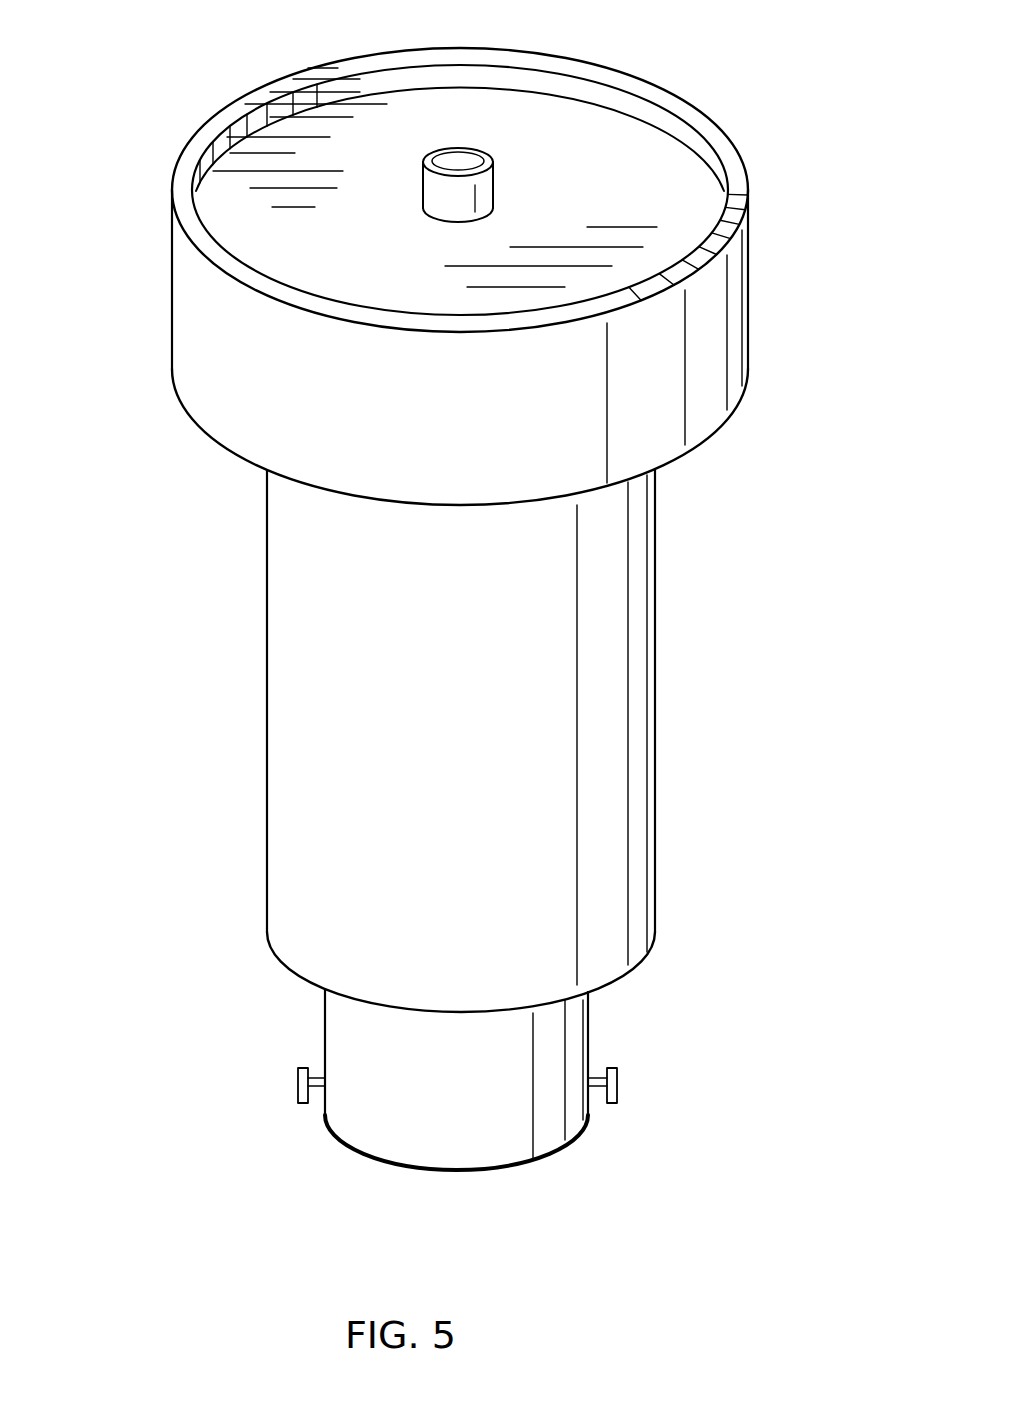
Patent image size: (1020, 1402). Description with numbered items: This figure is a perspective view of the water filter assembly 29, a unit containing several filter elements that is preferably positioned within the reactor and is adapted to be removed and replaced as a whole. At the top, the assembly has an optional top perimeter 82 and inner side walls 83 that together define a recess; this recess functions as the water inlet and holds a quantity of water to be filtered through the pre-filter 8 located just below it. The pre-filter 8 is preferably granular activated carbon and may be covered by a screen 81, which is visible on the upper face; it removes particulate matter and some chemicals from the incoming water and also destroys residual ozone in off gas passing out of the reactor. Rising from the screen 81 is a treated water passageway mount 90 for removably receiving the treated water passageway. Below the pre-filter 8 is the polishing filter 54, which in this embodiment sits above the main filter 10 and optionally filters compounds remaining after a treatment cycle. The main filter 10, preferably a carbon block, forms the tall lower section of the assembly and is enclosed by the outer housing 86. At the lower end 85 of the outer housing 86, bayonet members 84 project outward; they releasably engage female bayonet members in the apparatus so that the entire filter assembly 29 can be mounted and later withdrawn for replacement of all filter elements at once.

The filter assembly 29 is at (829, 240).
The pre-filter 8 is at (153, 184).
The polishing filter 54 is at (126, 375).
The main filter 10 is at (118, 508).
The screen 81 is at (605, 122).
The top perimeter 82 is at (727, 147).
The inner side walls 83 is at (504, 77).
The bayonet members 84 is at (618, 1101).
The lower end 85 is at (296, 1101).
The outer housing 86 is at (660, 849).
The treated water passageway mount 90 is at (421, 184).